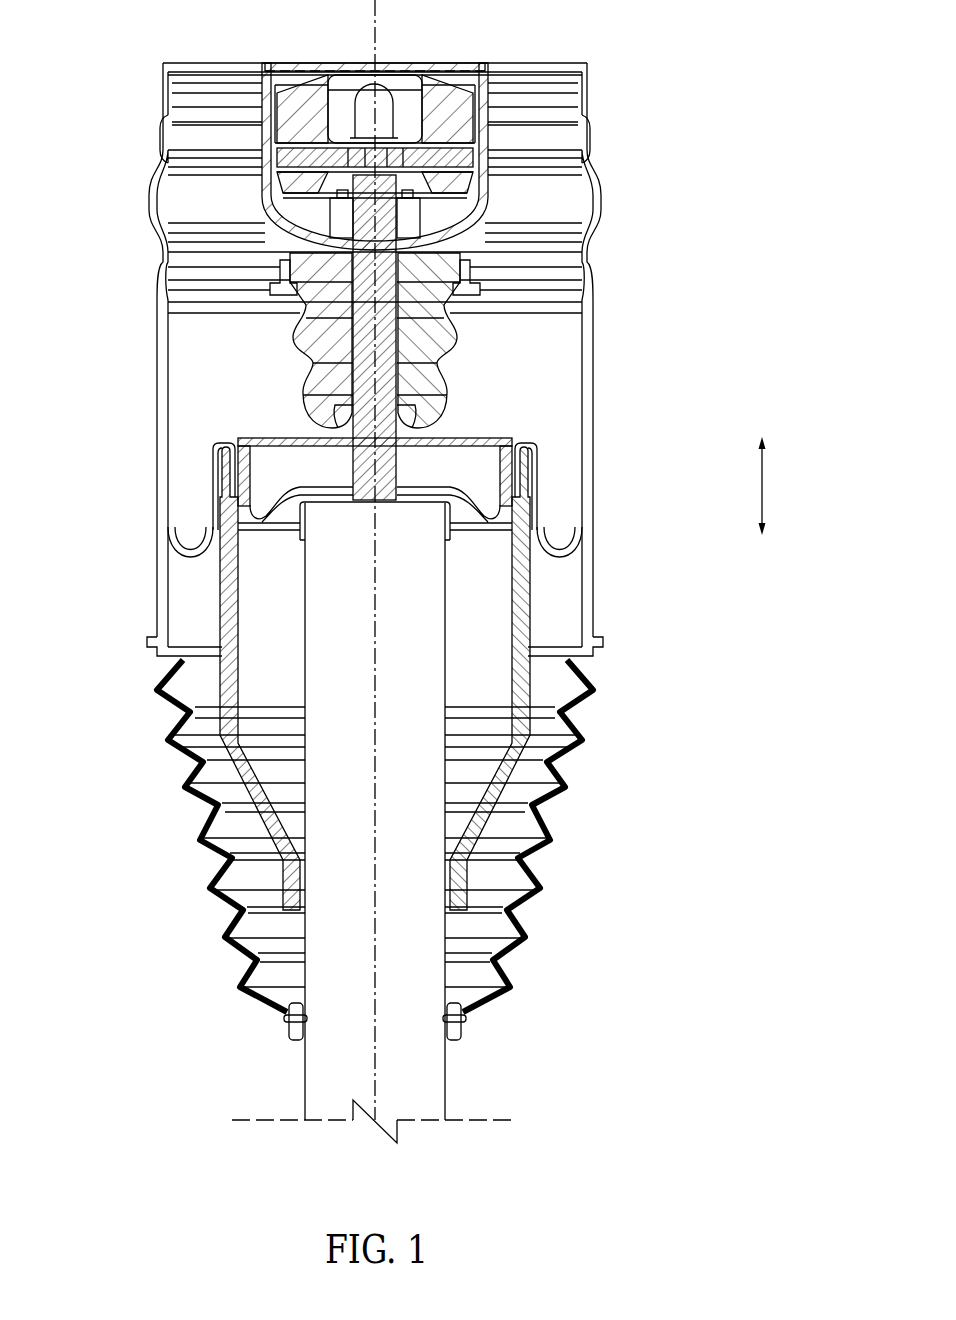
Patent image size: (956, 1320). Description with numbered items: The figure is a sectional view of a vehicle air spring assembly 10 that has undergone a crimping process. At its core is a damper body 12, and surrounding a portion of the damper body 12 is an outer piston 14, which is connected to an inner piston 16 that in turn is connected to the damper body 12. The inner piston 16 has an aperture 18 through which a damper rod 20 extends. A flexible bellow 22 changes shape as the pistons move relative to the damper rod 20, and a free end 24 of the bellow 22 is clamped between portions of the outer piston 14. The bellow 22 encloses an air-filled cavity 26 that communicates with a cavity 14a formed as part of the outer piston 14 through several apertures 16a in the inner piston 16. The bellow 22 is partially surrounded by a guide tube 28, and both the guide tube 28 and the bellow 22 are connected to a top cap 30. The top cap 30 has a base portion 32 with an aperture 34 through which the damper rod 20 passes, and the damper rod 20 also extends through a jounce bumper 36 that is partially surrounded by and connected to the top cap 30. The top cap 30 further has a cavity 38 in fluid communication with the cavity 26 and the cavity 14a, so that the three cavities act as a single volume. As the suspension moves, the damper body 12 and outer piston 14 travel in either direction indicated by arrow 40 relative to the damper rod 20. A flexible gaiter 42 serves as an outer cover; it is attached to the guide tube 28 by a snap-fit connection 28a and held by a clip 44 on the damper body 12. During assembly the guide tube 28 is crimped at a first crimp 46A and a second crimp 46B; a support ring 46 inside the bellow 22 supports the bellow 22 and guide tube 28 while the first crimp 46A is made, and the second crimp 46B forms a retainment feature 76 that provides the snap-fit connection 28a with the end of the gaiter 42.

The air spring assembly 10 is at (104, 82).
The damper body 12 is at (445, 1087).
The outer piston 14 is at (548, 838).
The cavity 14a is at (492, 688).
The inner piston 16 is at (527, 470).
The apertures 16a is at (283, 500).
The aperture 18 is at (213, 497).
The damper rod 20 is at (352, 383).
The bellow 22 is at (567, 557).
The free end 24 is at (290, 438).
The cavity 26 is at (200, 400).
The guide tube 28 is at (588, 392).
The snap-fit connection 28a is at (125, 640).
The top cap 30 is at (528, 63).
The base portion 32 is at (288, 112).
The aperture 34 is at (300, 250).
The jounce bumper 36 is at (327, 317).
The cavity 38 is at (548, 187).
The arrow 40 is at (765, 490).
The gaiter 42 is at (558, 772).
The clip 44 is at (272, 1058).
The support ring 46 is at (590, 257).
The first crimp 46A is at (630, 284).
The second crimp 46B is at (630, 620).
The retainment feature 76 is at (142, 658).